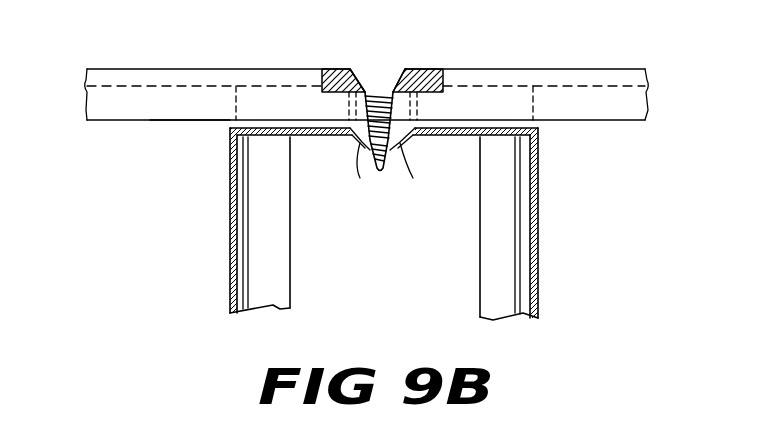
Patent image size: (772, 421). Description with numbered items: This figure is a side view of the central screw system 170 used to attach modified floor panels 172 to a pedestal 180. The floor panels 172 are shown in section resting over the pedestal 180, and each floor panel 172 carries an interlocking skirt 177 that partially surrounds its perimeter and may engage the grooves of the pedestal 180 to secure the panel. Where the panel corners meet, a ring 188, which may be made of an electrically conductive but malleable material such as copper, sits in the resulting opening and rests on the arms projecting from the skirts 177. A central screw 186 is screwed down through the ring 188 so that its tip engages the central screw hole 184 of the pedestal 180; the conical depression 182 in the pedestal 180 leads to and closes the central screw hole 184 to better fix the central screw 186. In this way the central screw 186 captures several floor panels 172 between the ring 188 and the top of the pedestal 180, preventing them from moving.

The central screw system 170 is at (490, 42).
The floor panel 172 is at (197, 68).
The interlocking skirt 177 is at (192, 112).
The pedestal 180 is at (565, 199).
The conical depression 182 is at (401, 161).
The central screw hole 184 is at (372, 165).
The central screw 186 is at (386, 68).
The ring 188 is at (336, 68).